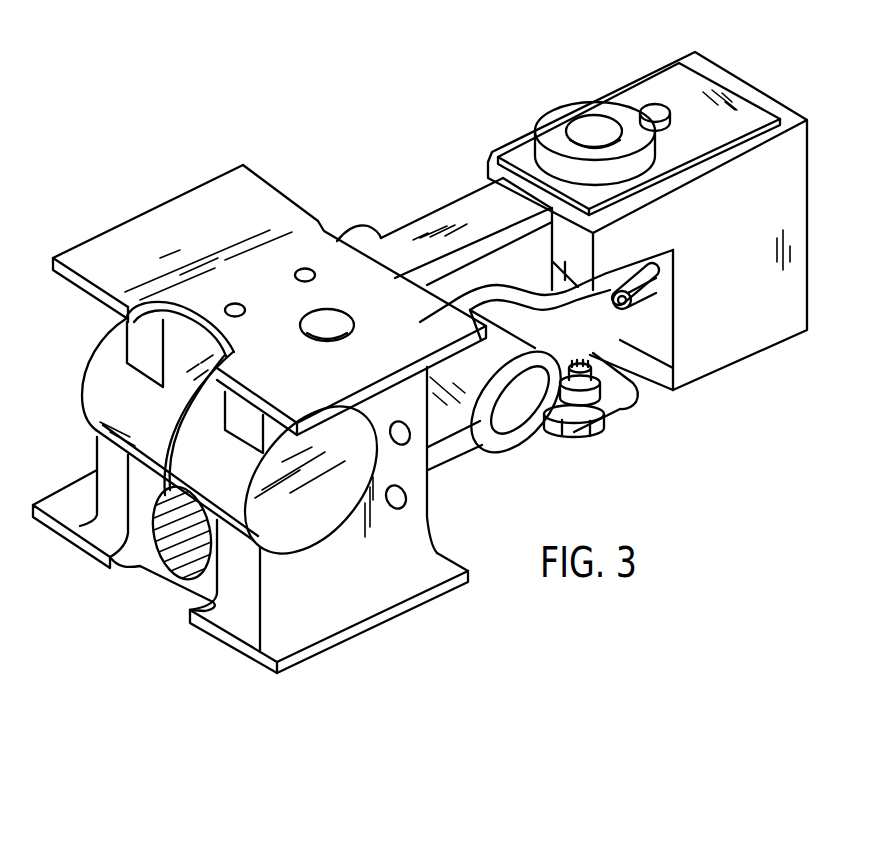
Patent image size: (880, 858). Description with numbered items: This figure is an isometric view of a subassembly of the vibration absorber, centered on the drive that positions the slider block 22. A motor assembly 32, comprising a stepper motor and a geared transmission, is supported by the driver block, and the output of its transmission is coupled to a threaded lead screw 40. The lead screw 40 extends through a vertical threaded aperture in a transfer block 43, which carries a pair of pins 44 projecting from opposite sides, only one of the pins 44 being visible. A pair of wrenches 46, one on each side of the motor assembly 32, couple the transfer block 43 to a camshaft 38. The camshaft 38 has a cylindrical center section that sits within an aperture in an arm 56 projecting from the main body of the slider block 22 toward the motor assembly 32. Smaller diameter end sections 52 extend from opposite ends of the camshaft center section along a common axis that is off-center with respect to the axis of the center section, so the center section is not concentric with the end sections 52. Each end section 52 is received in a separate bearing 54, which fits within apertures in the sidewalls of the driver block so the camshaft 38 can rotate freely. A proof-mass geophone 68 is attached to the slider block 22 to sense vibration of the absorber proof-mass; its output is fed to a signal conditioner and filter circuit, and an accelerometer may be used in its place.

The slider block 22 is at (134, 233).
The motor assembly 32 is at (670, 78).
The camshaft 38 is at (505, 405).
The threaded lead screw 40 is at (581, 374).
The transfer block 43 is at (646, 268).
The pins 44 is at (636, 302).
The wrenches 46 is at (612, 331).
The end sections 52 is at (541, 408).
The bearing 54 is at (355, 233).
The arm 56 is at (480, 198).
The proof-mass geophone 68 is at (103, 378).